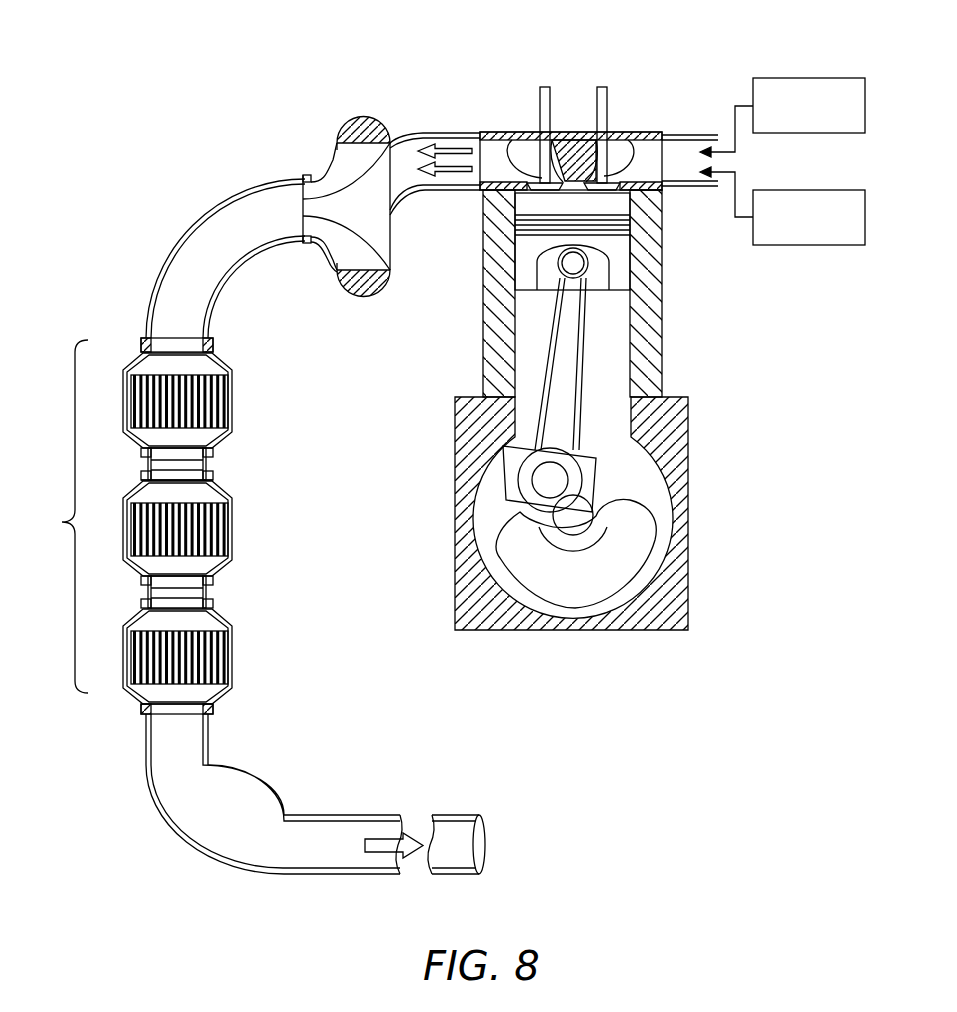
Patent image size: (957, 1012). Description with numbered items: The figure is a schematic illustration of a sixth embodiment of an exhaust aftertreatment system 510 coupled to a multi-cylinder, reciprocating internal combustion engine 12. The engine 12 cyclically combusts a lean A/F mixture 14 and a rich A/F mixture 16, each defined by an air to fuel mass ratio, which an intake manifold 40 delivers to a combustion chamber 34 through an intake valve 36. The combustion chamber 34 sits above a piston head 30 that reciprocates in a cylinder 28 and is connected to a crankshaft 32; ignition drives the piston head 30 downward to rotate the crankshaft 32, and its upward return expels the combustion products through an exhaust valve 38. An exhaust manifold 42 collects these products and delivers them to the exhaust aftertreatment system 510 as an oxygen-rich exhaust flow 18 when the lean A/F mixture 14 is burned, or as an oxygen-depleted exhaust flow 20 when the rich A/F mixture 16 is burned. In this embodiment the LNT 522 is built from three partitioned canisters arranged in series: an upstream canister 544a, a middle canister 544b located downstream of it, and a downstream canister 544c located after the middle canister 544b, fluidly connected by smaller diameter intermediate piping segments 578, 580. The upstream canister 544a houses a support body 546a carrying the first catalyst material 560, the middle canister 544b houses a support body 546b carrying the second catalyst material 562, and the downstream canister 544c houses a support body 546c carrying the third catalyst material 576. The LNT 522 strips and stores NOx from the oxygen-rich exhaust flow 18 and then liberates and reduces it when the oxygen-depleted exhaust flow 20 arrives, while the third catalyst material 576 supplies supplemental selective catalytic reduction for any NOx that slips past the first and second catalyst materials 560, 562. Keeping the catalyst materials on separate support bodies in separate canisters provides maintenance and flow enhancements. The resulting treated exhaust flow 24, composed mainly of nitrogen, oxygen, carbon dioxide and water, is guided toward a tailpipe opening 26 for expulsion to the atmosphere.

The multi-cylinder reciprocating internal combustion engine 12 is at (662, 272).
The lean A/F mixture 14 is at (795, 78).
The rich A/F mixture 16 is at (790, 245).
The oxygen-rich exhaust flow 18 is at (447, 150).
The oxygen-depleted exhaust flow 20 is at (437, 193).
The treated exhaust flow 24 is at (375, 853).
The tailpipe opening 26 is at (483, 843).
The cylinder 28 is at (632, 362).
The piston head 30 is at (525, 272).
The crankshaft 32 is at (550, 480).
The combustion chamber 34 is at (622, 205).
The intake valve 36 is at (603, 170).
The exhaust valve 38 is at (542, 177).
The intake manifold 40 is at (690, 133).
The exhaust manifold 42 is at (468, 137).
The exhaust aftertreatment system 510 is at (175, 178).
The LNT 522 is at (62, 521).
The upstream canister 544a is at (135, 357).
The middle canister 544b is at (130, 492).
The downstream canister 544c is at (132, 698).
The support body 546a is at (133, 400).
The support body 546b is at (133, 527).
The support body 546c is at (133, 657).
The first catalyst material 560 is at (210, 398).
The second catalyst material 562 is at (210, 526).
The third catalyst material 576 is at (210, 655).
The intermediate piping segment 578 is at (192, 463).
The intermediate piping segment 580 is at (192, 590).